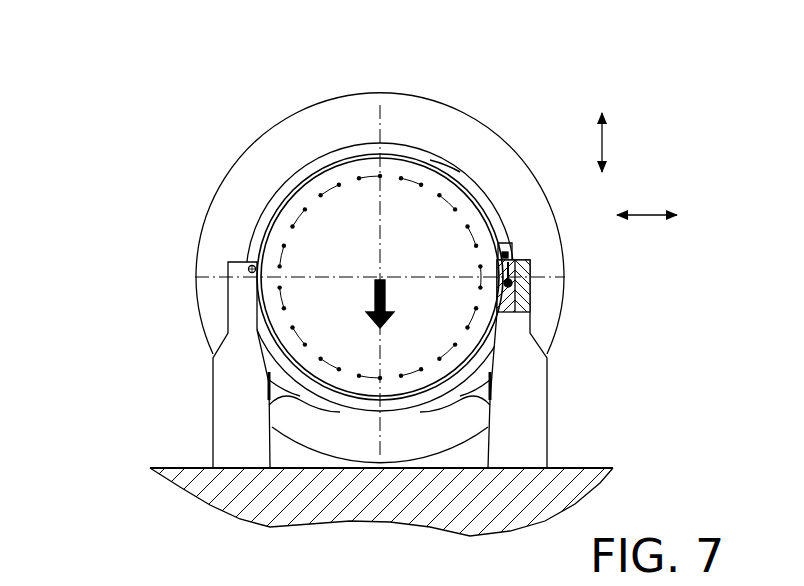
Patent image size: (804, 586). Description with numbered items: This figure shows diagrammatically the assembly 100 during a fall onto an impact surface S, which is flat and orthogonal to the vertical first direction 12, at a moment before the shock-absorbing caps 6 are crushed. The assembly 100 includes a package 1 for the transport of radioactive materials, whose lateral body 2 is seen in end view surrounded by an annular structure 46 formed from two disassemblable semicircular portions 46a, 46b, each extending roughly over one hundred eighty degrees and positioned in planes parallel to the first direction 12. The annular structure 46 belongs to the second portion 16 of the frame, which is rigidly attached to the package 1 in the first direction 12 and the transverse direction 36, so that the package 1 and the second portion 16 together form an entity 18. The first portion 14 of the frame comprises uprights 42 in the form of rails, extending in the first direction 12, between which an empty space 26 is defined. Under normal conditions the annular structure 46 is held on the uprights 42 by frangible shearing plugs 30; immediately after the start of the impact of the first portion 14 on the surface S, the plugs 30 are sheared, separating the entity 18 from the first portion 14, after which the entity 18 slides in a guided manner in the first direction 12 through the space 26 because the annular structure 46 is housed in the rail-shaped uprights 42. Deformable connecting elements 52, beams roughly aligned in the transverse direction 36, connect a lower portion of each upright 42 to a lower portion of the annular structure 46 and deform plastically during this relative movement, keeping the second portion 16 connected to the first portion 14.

The assembly 100 is at (181, 114).
The shock-absorbing cap 6 is at (428, 125).
The package 1 is at (297, 164).
The second portion 16 is at (337, 129).
The entity 18 is at (277, 181).
The lateral body 2 is at (480, 196).
The annular structure 46 is at (424, 170).
The semicircular portion 46a is at (445, 160).
The semicircular portion 46b is at (400, 405).
The first direction 12 is at (603, 143).
The transverse direction 36 is at (647, 216).
The frangible shearing plug 30 is at (248, 270).
The first portion 14 is at (557, 369).
The upright 42 is at (232, 405).
The empty space 26 is at (348, 448).
The deformable connecting element 52 is at (298, 396).
The impact surface S is at (172, 468).